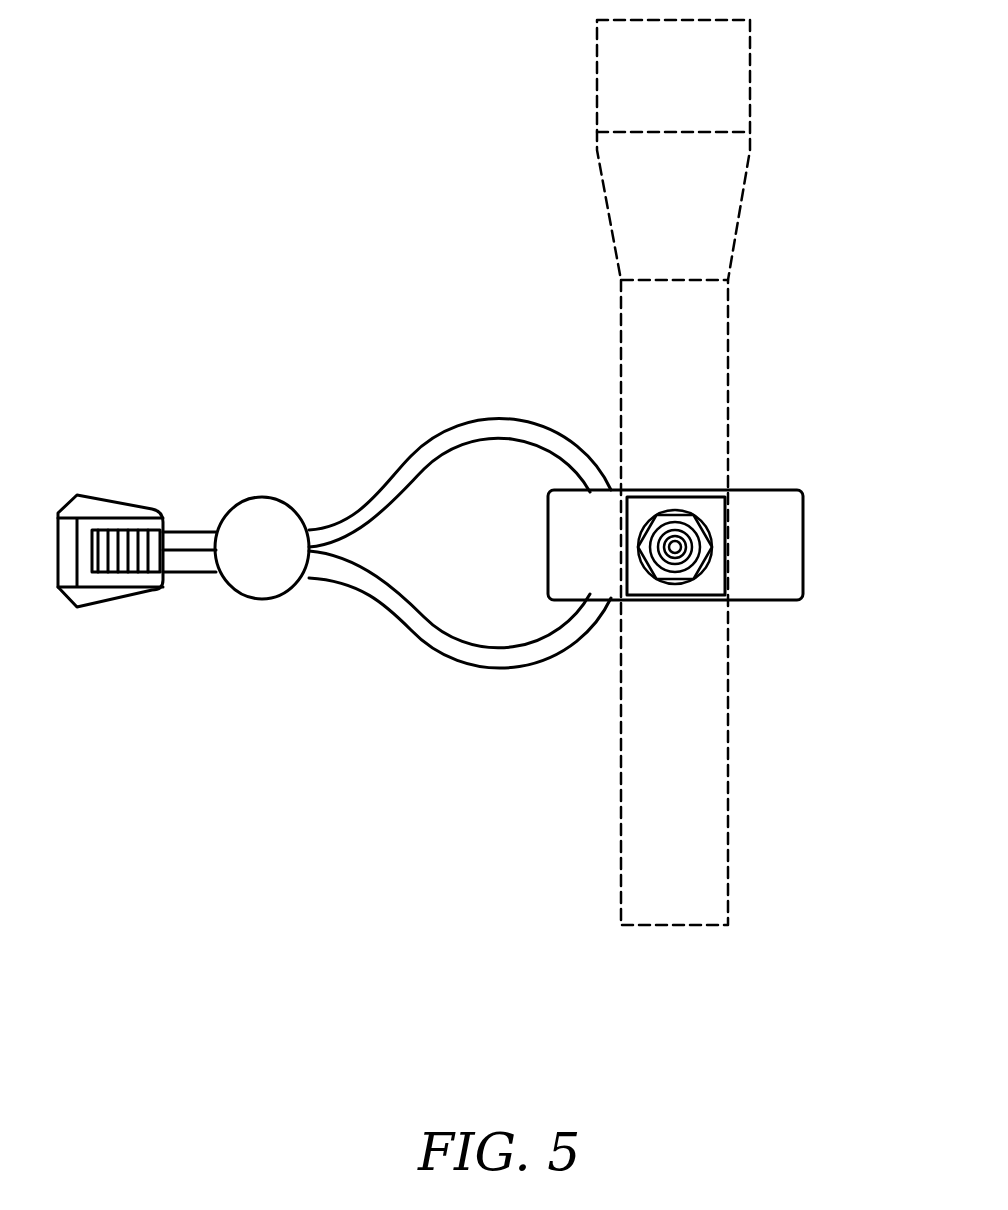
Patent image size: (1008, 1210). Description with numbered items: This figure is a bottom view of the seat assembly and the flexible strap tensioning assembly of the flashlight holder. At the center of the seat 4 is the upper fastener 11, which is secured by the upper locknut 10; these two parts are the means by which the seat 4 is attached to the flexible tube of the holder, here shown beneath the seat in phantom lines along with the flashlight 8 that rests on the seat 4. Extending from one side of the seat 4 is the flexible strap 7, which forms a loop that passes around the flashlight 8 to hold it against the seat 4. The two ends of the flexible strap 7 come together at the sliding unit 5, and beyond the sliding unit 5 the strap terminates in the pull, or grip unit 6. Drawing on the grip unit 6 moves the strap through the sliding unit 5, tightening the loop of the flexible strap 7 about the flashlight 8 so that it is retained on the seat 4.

The seat 4 is at (790, 543).
The sliding unit 5 is at (261, 490).
The grip unit 6 is at (88, 595).
The flexible strap 7 is at (501, 425).
The flashlight 8 is at (693, 313).
The locknut 10 is at (676, 547).
The upper fastener 11 is at (690, 550).